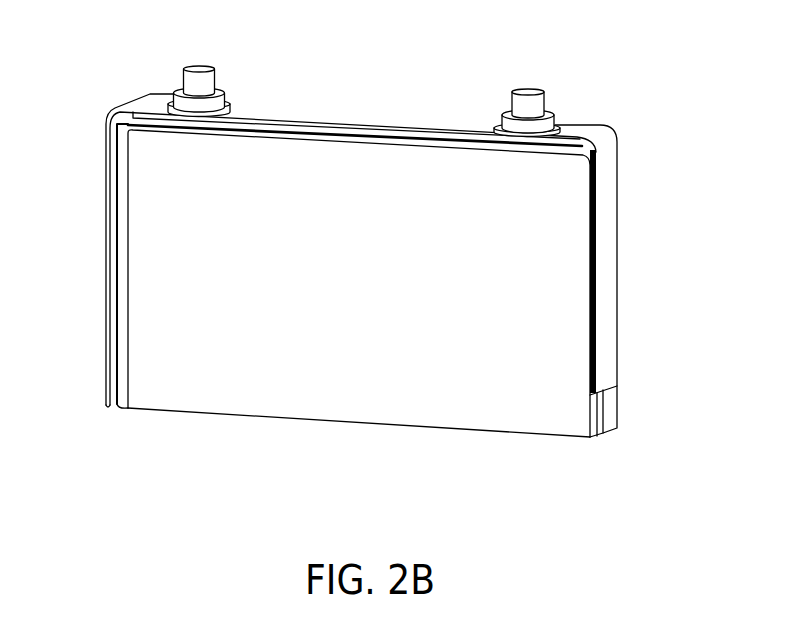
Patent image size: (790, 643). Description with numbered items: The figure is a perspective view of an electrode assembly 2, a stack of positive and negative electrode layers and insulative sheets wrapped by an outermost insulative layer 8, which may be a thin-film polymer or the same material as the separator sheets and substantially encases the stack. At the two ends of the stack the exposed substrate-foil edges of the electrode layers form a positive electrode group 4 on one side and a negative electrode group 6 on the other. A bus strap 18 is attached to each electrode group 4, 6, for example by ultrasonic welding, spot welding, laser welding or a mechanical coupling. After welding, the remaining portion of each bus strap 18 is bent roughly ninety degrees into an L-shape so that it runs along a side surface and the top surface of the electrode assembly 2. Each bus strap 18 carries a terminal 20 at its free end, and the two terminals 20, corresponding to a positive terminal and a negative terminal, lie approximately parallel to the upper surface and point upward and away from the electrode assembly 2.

The electrode assembly 2 is at (148, 267).
The positive electrode group 4 is at (122, 399).
The negative electrode group 6 is at (598, 437).
The outermost insulative layer 8 is at (452, 432).
The bus strap 18 is at (118, 117).
The terminal 20 is at (545, 97).